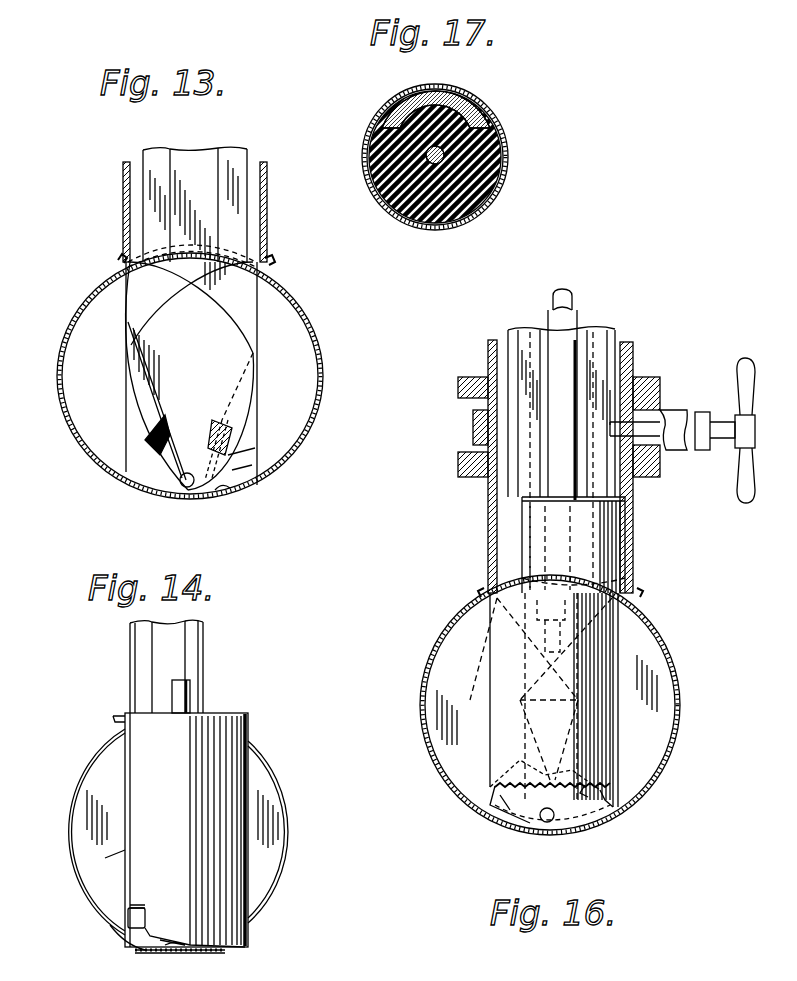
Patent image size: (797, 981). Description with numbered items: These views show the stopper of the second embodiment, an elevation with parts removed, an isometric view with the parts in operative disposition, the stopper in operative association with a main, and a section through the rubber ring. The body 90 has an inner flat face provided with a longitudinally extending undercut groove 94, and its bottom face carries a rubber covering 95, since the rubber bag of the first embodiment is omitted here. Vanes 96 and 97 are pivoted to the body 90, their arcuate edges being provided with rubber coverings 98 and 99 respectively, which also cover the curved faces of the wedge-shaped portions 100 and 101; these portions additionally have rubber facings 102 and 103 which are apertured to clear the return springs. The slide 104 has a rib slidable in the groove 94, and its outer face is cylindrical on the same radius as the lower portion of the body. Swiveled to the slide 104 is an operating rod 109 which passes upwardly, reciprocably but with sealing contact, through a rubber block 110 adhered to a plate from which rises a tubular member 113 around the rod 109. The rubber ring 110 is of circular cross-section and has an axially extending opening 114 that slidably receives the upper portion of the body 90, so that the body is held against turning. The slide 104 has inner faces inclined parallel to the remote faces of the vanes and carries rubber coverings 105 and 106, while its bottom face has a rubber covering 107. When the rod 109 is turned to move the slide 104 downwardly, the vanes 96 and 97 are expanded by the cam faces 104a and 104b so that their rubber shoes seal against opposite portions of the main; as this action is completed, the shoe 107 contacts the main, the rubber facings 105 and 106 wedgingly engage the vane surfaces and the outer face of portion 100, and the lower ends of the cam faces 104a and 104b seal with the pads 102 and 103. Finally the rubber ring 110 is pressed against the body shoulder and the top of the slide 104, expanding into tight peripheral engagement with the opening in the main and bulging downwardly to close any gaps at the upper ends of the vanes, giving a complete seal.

In FIG. 13, the body 90 is at (232, 227).
In FIG. 17, the body 90 is at (485, 100).
In FIG. 16, the body 90 is at (600, 355).
In FIG. 13, the undercut groove 94 is at (203, 187).
In FIG. 16, the undercut groove 94 is at (580, 380).
In FIG. 14, the undercut groove 94 is at (167, 650).
In FIG. 13, the rubber covering 95 is at (228, 490).
In FIG. 14, the rubber covering 95 is at (140, 950).
In FIG. 13, the vane 96 is at (240, 300).
In FIG. 16, the vane 96 is at (450, 652).
In FIG. 14, the vane 96 is at (95, 776).
In FIG. 13, the vane 97 is at (137, 292).
In FIG. 16, the vane 97 is at (650, 660).
In FIG. 14, the vane 97 is at (265, 770).
In FIG. 13, the rubber covering 98 is at (125, 380).
In FIG. 14, the rubber covering 98 is at (92, 748).
In FIG. 13, the rubber covering 99 is at (257, 350).
In FIG. 14, the rubber covering 99 is at (283, 798).
In FIG. 13, the wedge-shaped portion 100 is at (150, 463).
In FIG. 14, the wedge-shaped portion 100 is at (128, 920).
In FIG. 13, the wedge-shaped portion 101 is at (240, 470).
In FIG. 13, the rubber facing 102 is at (162, 470).
In FIG. 14, the rubber facing 102 is at (140, 912).
In FIG. 13, the rubber facing 103 is at (233, 452).
In FIG. 16, the slide 104 is at (515, 638).
In FIG. 14, the slide 104 is at (208, 745).
In FIG. 16, the cam face 104a is at (595, 725).
In FIG. 16, the cam face 104b is at (530, 685).
In FIG. 16, the rubber covering 105 is at (500, 726).
In FIG. 14, the rubber covering 105 is at (125, 855).
In FIG. 16, the rubber covering 106 is at (615, 700).
In FIG. 16, the rubber covering 107 is at (535, 823).
In FIG. 14, the rubber covering 107 is at (215, 952).
In FIG. 17, the operating rod 109 is at (492, 151).
In FIG. 16, the operating rod 109 is at (567, 305).
In FIG. 14, the operating rod 109 is at (180, 695).
In FIG. 17, the rubber block 110 is at (495, 200).
In FIG. 16, the rubber block 110 is at (605, 567).
In FIG. 16, the tubular member 113 is at (560, 340).
In FIG. 17, the opening 114 is at (382, 118).